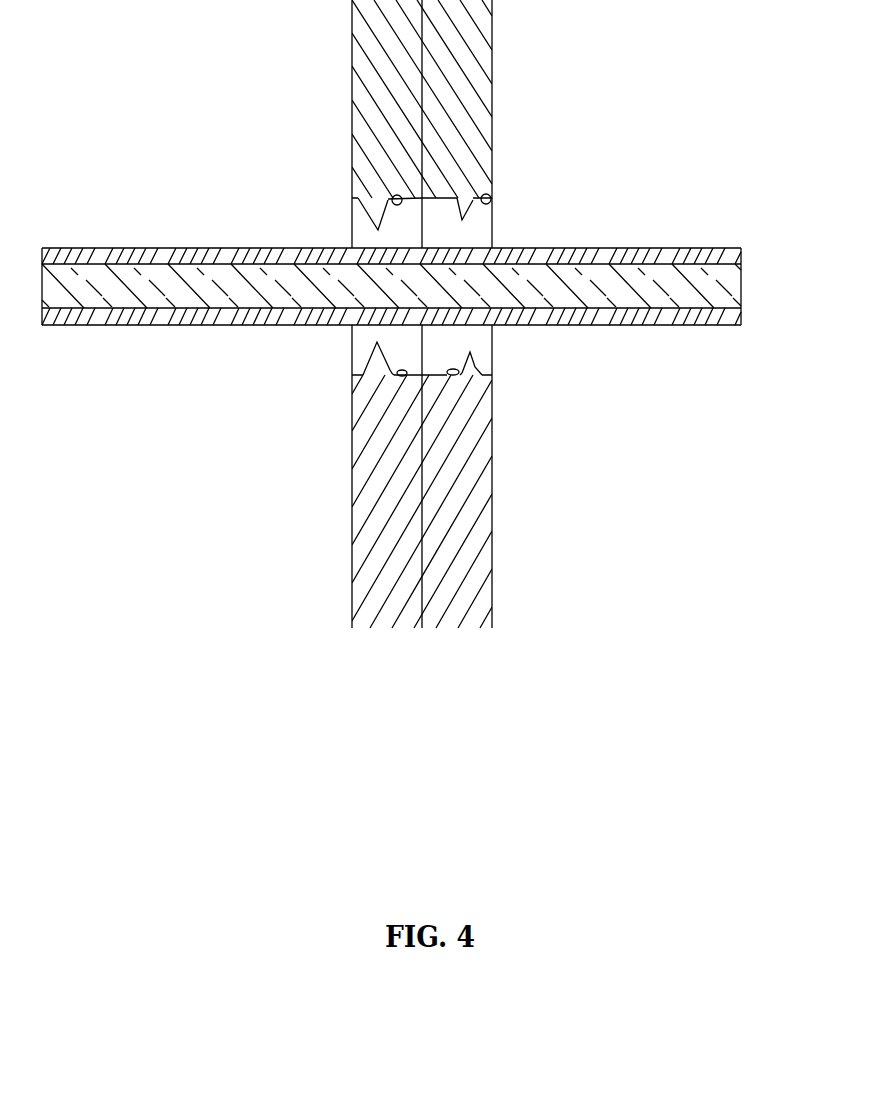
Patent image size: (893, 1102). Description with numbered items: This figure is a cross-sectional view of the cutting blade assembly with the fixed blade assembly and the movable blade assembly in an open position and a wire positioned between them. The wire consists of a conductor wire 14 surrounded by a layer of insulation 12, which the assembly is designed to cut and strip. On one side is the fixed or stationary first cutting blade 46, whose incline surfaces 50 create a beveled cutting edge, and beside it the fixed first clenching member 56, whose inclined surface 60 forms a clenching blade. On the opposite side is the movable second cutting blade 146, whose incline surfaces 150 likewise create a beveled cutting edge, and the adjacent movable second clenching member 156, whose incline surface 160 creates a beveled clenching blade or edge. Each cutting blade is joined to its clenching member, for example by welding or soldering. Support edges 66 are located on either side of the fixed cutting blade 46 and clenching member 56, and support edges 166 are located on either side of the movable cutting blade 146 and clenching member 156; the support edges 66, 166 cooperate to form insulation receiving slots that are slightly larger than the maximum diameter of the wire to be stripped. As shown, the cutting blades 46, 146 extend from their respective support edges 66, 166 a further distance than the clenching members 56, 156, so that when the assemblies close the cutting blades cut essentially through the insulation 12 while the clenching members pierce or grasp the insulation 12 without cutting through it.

The insulation 12 is at (580, 247).
The conductor wire 14 is at (627, 293).
The first cutting blade 46 is at (370, 466).
The incline surfaces 50 is at (370, 355).
The first clenching member 56 is at (476, 457).
The inclined surface 60 is at (463, 370).
The support edges 66 is at (374, 370).
The second cutting blade 146 is at (370, 75).
The incline surfaces 150 is at (380, 213).
The second clenching member 156 is at (467, 77).
The incline surface 160 is at (460, 210).
The support edges 166 is at (379, 227).